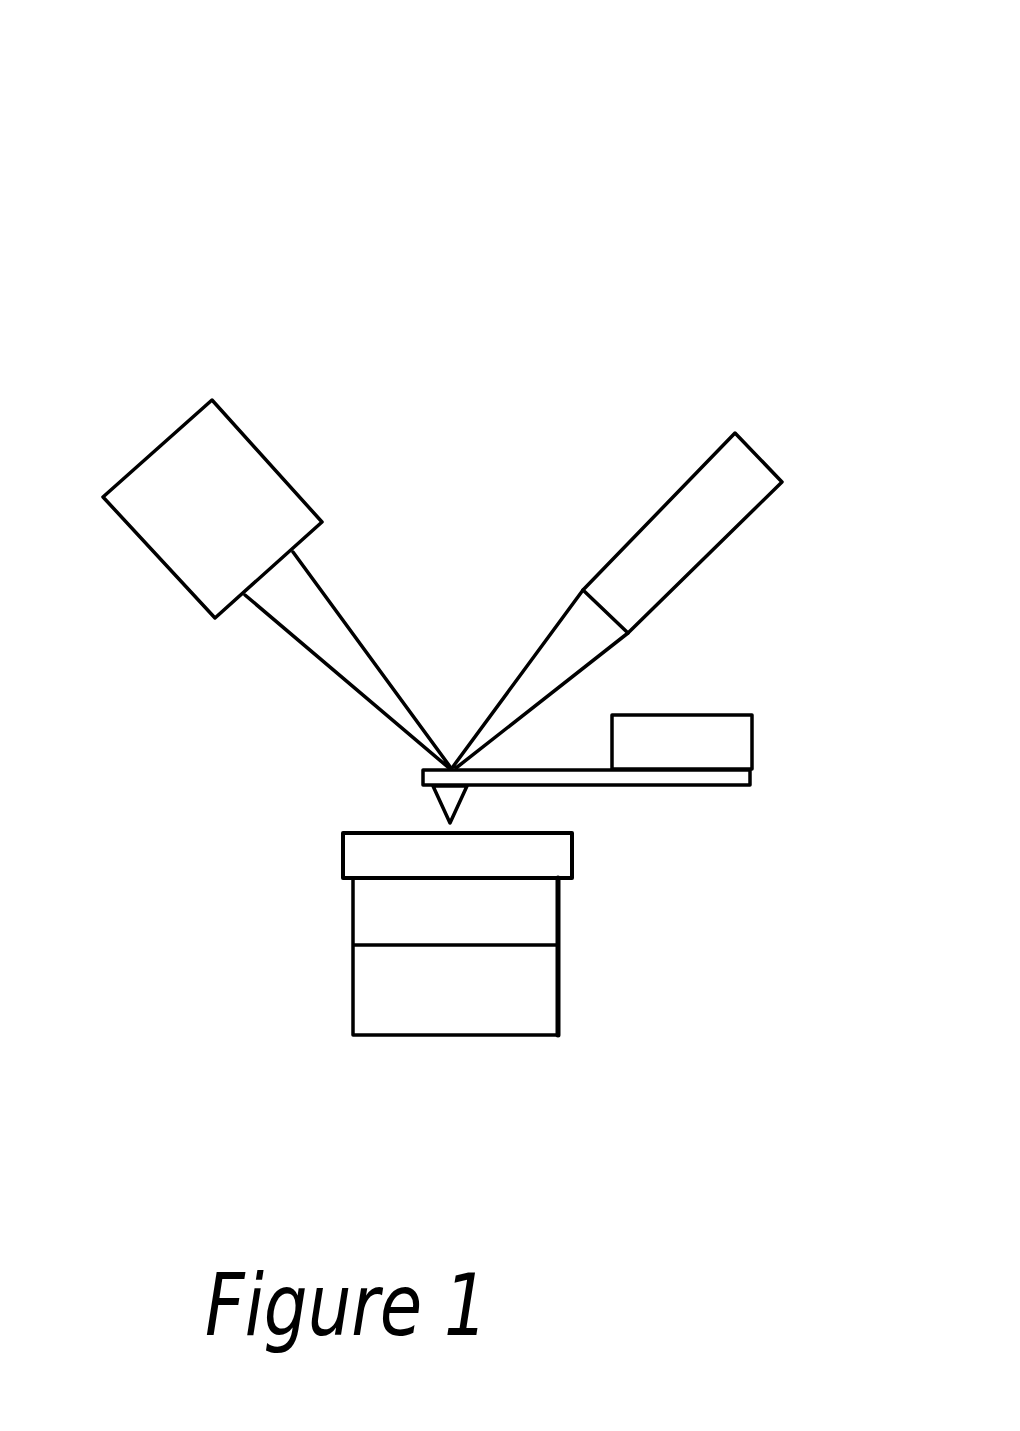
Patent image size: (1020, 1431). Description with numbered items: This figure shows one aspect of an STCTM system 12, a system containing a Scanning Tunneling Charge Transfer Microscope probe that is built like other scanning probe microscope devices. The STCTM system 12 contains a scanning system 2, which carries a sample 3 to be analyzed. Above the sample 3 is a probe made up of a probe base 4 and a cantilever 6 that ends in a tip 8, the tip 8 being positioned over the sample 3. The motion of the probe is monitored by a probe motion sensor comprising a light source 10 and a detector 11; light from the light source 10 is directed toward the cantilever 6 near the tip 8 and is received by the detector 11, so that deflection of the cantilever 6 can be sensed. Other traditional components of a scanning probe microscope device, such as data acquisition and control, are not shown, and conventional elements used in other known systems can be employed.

The STCTM system 12 is at (478, 285).
The detector 11 is at (147, 546).
The light source 10 is at (698, 465).
The tip 8 is at (433, 810).
The cantilever 6 is at (660, 787).
The probe base 4 is at (713, 697).
The sample 3 is at (343, 853).
The scanning system 2 is at (572, 952).